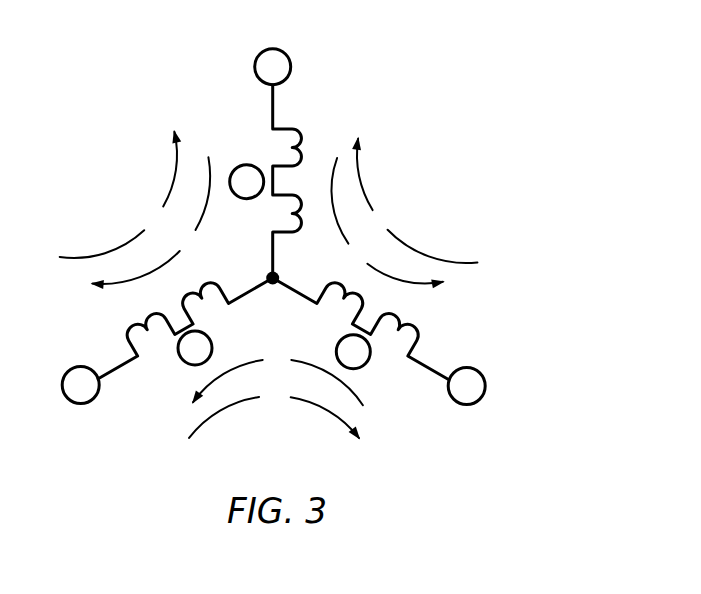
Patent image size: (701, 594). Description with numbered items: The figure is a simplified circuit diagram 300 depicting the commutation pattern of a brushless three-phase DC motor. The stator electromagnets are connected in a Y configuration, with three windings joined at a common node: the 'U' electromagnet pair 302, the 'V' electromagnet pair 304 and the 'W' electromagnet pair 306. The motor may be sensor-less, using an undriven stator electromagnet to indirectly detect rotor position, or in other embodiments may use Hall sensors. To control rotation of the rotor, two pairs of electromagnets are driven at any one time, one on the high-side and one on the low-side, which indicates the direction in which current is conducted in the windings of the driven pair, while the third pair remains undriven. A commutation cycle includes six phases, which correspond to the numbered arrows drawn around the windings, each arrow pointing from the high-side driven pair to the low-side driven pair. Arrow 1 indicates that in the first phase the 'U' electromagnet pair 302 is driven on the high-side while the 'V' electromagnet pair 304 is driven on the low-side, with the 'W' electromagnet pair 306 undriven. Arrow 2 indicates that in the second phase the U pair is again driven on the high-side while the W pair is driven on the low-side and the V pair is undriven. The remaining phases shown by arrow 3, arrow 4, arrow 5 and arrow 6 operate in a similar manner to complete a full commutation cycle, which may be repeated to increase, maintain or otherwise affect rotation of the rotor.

The commutation pattern circuit diagram 300 is at (432, 94).
The 'U' electromagnet pair 302 is at (264, 82).
The 'V' electromagnet pair 304 is at (448, 388).
The 'W' electromagnet pair 306 is at (186, 363).
The arrow for first commutation phase 1 is at (387, 223).
The arrow for second commutation phase 2 is at (150, 223).
The arrow for third commutation phase 3 is at (277, 378).
The arrow for fourth commutation phase 4 is at (414, 200).
The arrow for fifth commutation phase 5 is at (121, 194).
The arrow for sixth commutation phase 6 is at (274, 409).